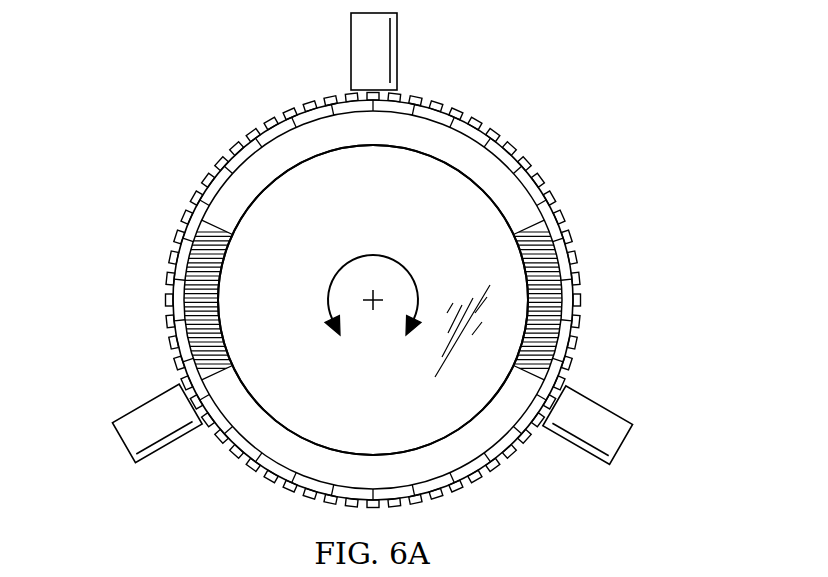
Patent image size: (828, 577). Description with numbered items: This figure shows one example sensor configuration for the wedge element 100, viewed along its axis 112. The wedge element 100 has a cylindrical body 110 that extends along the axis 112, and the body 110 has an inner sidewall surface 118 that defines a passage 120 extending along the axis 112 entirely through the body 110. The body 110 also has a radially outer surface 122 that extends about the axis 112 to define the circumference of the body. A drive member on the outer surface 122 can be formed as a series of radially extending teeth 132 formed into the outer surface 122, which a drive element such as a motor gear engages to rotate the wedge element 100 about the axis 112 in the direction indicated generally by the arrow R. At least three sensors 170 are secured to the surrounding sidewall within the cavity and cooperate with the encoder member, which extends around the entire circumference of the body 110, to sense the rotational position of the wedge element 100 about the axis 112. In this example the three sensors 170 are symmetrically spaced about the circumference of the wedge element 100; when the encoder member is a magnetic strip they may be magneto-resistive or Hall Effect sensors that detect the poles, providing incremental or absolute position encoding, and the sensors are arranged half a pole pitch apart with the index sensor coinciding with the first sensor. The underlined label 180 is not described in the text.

The wedge element 100 is at (134, 200).
The cylindrical body 110 is at (499, 193).
The axis 112 is at (373, 306).
The inner sidewall surface 118 is at (372, 453).
The passage 120 is at (307, 421).
The radially outer surface 122 is at (432, 102).
The teeth 132 is at (510, 150).
The sensors 170 is at (351, 52).
The interior region 180 is at (397, 203).
The direction of rotation R is at (333, 251).